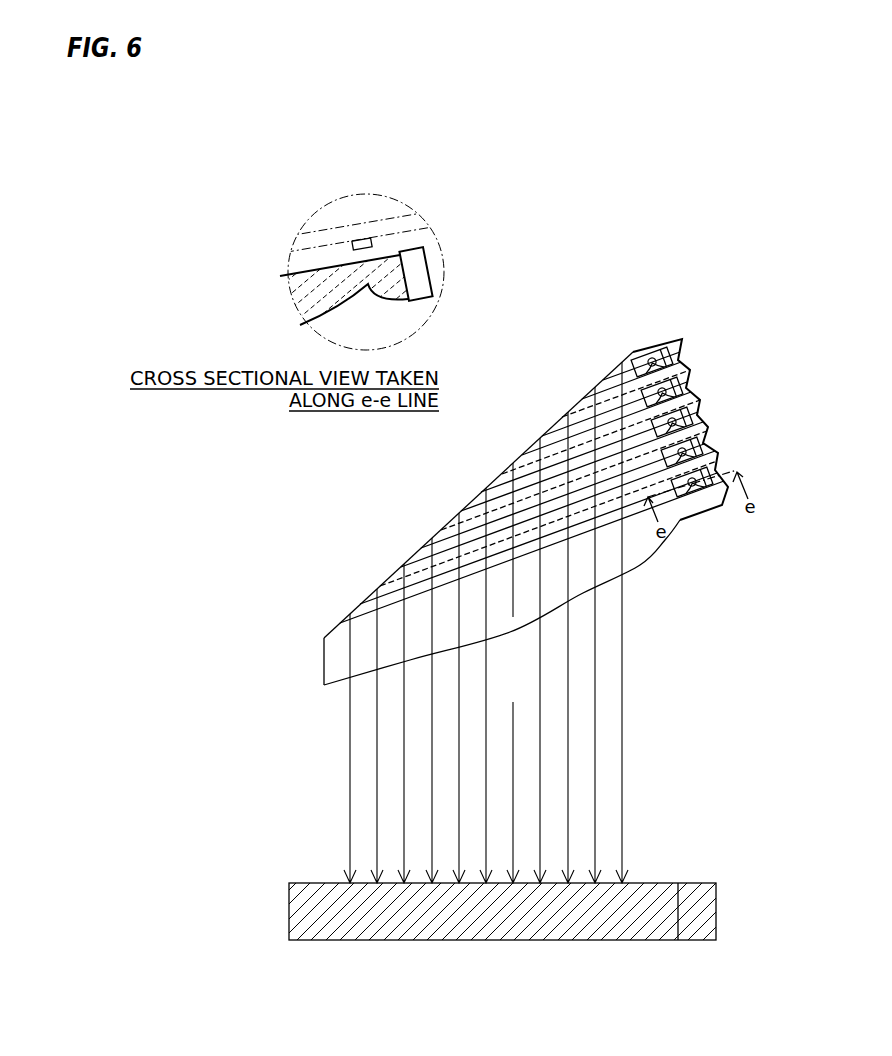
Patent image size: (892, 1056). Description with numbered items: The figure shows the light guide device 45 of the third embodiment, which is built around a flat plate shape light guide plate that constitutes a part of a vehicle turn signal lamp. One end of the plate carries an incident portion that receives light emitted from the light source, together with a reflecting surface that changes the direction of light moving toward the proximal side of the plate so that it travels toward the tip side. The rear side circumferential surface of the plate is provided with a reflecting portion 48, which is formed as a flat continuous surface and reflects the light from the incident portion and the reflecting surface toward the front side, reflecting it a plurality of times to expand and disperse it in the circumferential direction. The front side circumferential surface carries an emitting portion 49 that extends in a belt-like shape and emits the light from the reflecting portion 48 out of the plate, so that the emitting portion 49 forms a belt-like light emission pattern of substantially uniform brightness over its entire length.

The light guide device 45 is at (511, 430).
The reflecting portion 48 is at (445, 525).
The emitting portion 49 is at (512, 635).